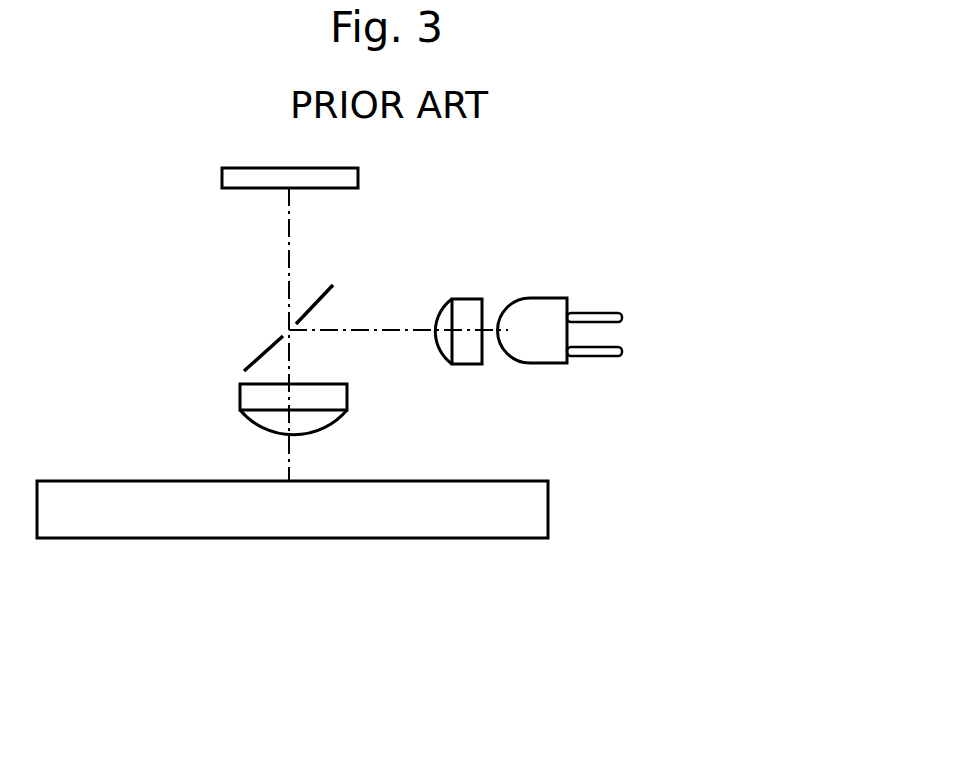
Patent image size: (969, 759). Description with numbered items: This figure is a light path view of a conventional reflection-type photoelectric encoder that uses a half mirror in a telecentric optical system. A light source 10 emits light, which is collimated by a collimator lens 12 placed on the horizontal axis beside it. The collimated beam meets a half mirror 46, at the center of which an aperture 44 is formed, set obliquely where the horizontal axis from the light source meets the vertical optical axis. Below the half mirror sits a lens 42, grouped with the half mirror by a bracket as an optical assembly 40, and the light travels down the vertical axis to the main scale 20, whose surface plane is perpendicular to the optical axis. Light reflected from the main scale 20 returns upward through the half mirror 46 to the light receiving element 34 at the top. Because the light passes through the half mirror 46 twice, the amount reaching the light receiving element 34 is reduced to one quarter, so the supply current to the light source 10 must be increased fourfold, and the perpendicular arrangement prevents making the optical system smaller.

The light source 10 is at (545, 298).
The collimator lens 12 is at (462, 299).
The main scale 20 is at (548, 510).
The light receiving element 34 is at (358, 178).
The optical unit 40 is at (160, 295).
The objective lens 42 is at (240, 396).
The aperture 44 is at (258, 296).
The half mirror 46 is at (288, 330).